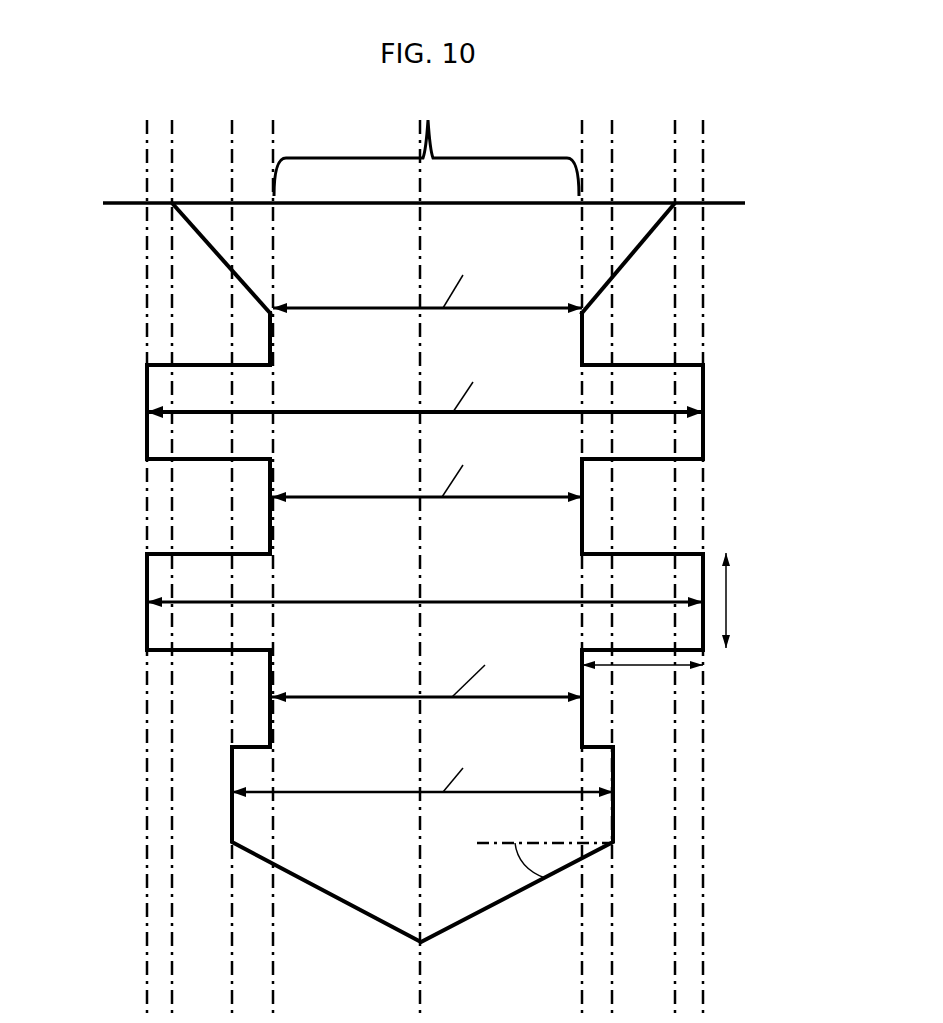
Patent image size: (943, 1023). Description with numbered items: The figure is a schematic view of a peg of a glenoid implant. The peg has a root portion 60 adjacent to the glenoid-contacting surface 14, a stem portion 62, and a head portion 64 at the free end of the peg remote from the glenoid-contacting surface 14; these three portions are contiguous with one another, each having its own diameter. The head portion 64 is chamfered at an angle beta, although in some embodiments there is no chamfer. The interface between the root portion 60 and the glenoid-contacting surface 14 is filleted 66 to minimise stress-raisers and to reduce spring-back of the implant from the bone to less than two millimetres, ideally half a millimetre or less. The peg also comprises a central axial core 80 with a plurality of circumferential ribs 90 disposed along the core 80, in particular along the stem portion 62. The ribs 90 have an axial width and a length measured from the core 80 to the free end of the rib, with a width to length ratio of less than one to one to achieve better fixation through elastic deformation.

The glenoid-contacting surface 14 is at (120, 212).
The root portion 60 is at (436, 306).
The stem portion 62 is at (426, 552).
The head portion 64 is at (736, 738).
The fillet 66 is at (273, 233).
The central axial core 80 is at (473, 158).
The circumferential ribs 90 is at (195, 465).